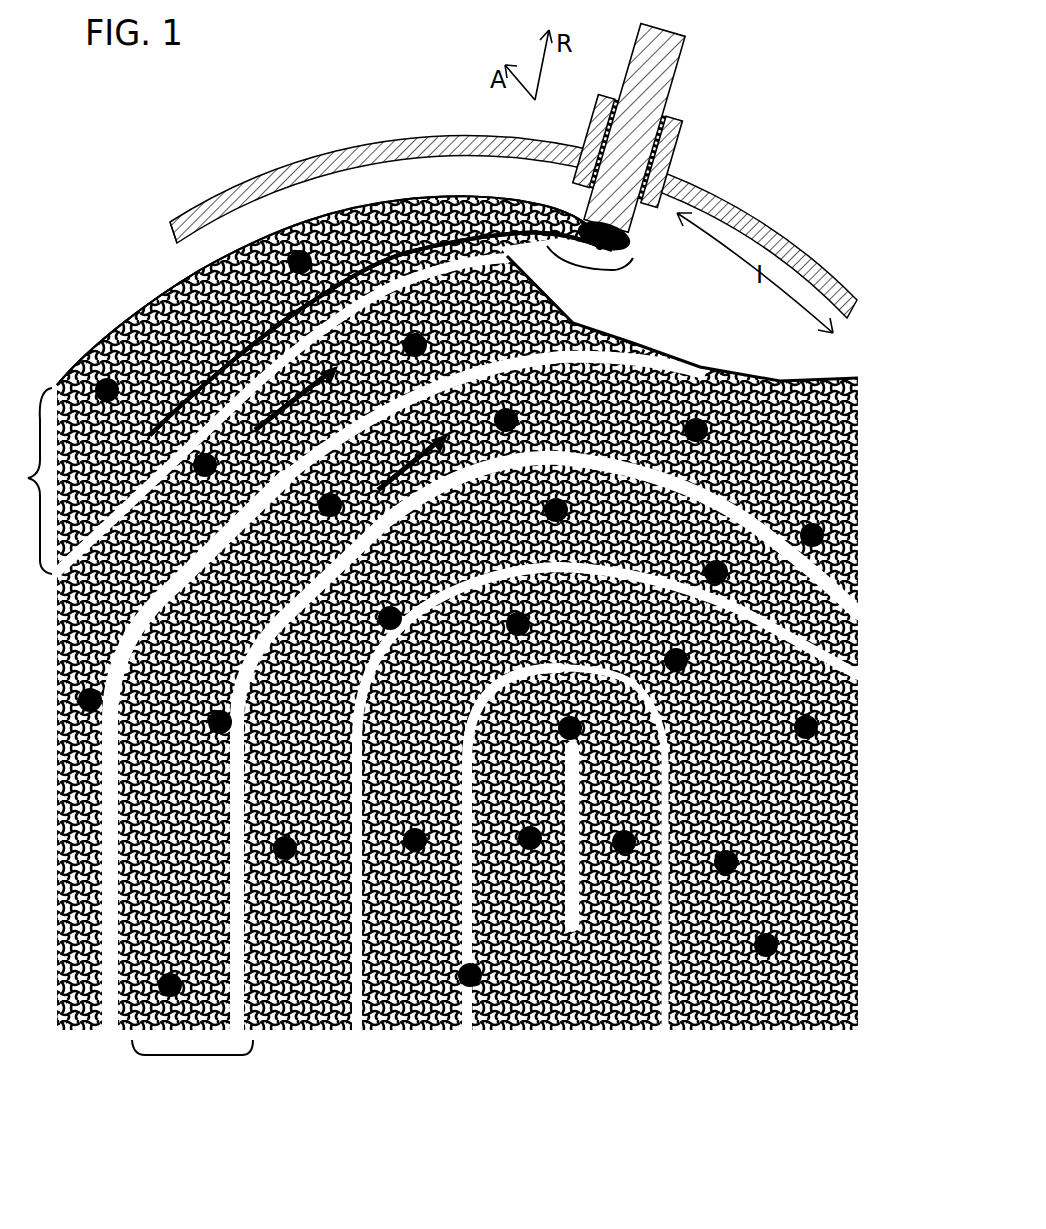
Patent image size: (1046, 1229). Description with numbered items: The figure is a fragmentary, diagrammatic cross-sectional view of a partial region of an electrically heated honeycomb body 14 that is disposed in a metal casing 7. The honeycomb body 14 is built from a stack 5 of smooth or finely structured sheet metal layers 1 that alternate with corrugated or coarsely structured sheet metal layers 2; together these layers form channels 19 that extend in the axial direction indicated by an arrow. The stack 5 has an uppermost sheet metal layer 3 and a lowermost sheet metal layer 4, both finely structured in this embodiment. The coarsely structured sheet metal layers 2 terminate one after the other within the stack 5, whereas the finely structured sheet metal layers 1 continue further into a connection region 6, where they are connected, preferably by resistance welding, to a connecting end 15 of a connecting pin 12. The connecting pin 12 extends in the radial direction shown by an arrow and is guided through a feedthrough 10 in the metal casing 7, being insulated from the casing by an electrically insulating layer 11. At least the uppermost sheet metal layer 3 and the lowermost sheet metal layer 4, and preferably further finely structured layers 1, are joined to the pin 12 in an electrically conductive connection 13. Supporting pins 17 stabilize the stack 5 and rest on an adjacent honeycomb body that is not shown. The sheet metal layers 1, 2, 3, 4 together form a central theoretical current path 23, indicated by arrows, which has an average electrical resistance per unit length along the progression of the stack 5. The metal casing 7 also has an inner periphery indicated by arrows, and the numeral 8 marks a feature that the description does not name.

The finely structured sheet metal layer 1 is at (63, 380).
The coarsely structured sheet metal layer 2 is at (440, 205).
The uppermost sheet metal layer 3 is at (343, 212).
The lowermost sheet metal layer 4 is at (197, 378).
The stack 5 is at (126, 750).
The connection region 6 is at (590, 274).
The metal casing 7 is at (353, 152).
The edge region 8 is at (226, 240).
The feedthrough 10 is at (672, 132).
The electrically insulating layer 11 is at (652, 147).
The connecting pin 12 is at (678, 47).
The electrically conductive connection 13 is at (598, 250).
The electrically heated honeycomb body 14 is at (668, 1034).
The connecting end 15 is at (632, 236).
The supporting pin 17 is at (237, 278).
The channel 19 is at (262, 242).
The central current path 23 is at (351, 391).